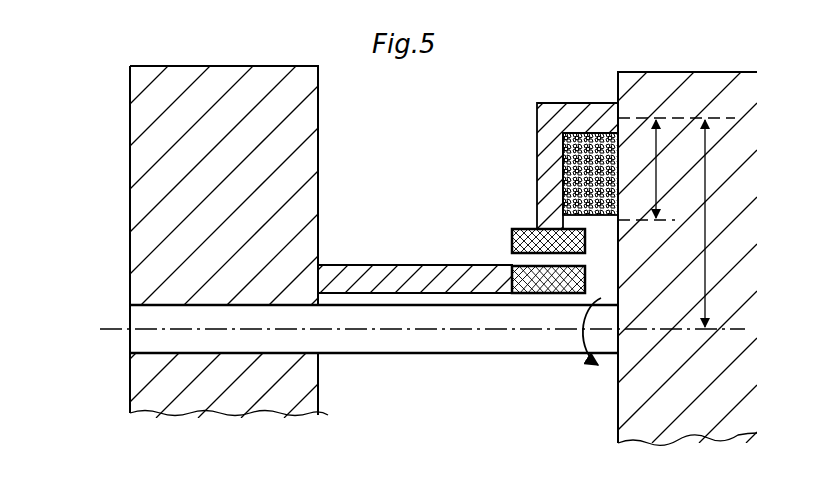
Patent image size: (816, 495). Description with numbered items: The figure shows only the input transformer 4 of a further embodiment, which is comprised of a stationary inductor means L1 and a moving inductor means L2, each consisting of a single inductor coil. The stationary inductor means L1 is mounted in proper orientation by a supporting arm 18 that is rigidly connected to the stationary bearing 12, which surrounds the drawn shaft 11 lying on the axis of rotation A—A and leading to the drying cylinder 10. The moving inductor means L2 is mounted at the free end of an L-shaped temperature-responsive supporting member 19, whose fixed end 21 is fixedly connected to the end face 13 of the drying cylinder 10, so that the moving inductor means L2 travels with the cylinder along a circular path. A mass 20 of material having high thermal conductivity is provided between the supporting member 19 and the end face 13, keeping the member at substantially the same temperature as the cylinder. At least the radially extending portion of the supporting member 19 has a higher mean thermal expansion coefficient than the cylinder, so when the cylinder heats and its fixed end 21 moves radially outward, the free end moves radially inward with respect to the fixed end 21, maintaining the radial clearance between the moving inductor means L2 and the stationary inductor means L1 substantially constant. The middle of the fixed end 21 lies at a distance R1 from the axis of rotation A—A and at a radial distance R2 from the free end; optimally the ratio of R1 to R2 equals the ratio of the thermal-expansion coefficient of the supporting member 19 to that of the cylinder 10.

The input transformer 4 is at (508, 253).
The drying cylinder 10 is at (658, 418).
The shaft 11 is at (414, 357).
The stationary bearing 12 is at (305, 398).
The end face 13 is at (618, 392).
The supporting arm 18 is at (393, 290).
The temperature-responsive supporting member 19 is at (548, 115).
The mass of high thermal conductivity material 20 is at (563, 142).
The fixed end 21 is at (615, 107).
The stationary inductor means L1 is at (600, 284).
The moving inductor means L2 is at (600, 246).
The distance from axis of rotation to fixed end R1 is at (707, 223).
The radial distance from fixed end to free end R2 is at (676, 169).